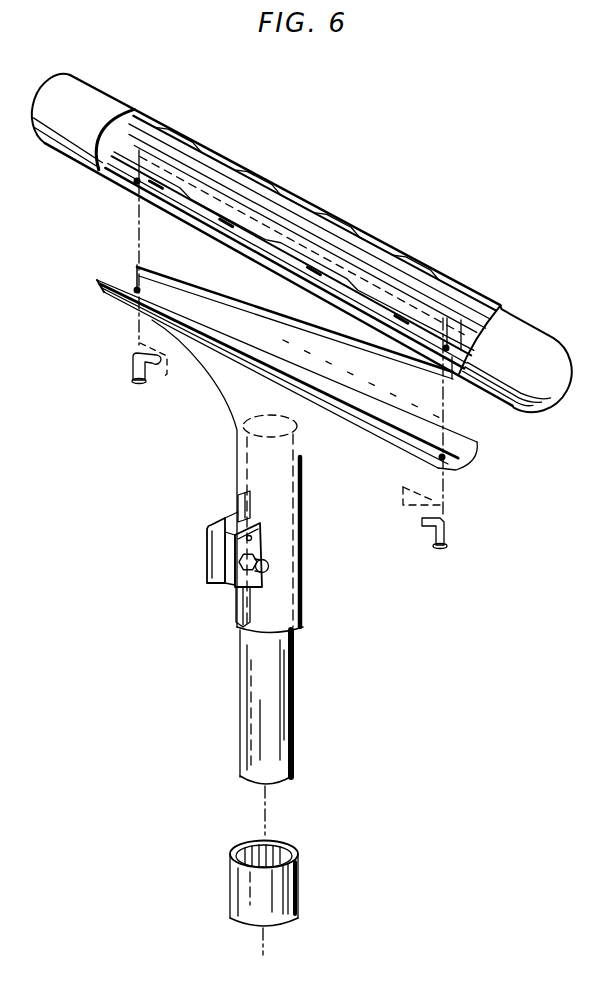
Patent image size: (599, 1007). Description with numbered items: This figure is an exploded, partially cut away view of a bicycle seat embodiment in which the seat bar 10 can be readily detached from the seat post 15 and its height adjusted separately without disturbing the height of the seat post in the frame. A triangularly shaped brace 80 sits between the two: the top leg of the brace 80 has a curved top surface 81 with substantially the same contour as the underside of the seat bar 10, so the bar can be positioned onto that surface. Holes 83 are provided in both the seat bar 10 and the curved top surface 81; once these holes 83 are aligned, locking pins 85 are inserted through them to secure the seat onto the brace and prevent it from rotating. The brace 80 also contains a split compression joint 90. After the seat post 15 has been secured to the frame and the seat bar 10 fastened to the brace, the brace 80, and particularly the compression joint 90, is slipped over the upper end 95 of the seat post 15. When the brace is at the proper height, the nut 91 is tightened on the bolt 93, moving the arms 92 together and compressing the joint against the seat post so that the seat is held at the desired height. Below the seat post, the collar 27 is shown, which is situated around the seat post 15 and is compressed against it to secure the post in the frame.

The seat bar 10 is at (316, 199).
The seat post 15 is at (292, 708).
The collar 27 is at (298, 886).
The brace 80 is at (393, 453).
The curved top surface 81 is at (135, 366).
The holes 83 is at (136, 289).
The locking pins 85 is at (446, 536).
The split compression joint 90 is at (259, 554).
The nut 91 is at (253, 543).
The arms 92 is at (221, 583).
The bolt 93 is at (269, 563).
The upper end 95 is at (265, 408).